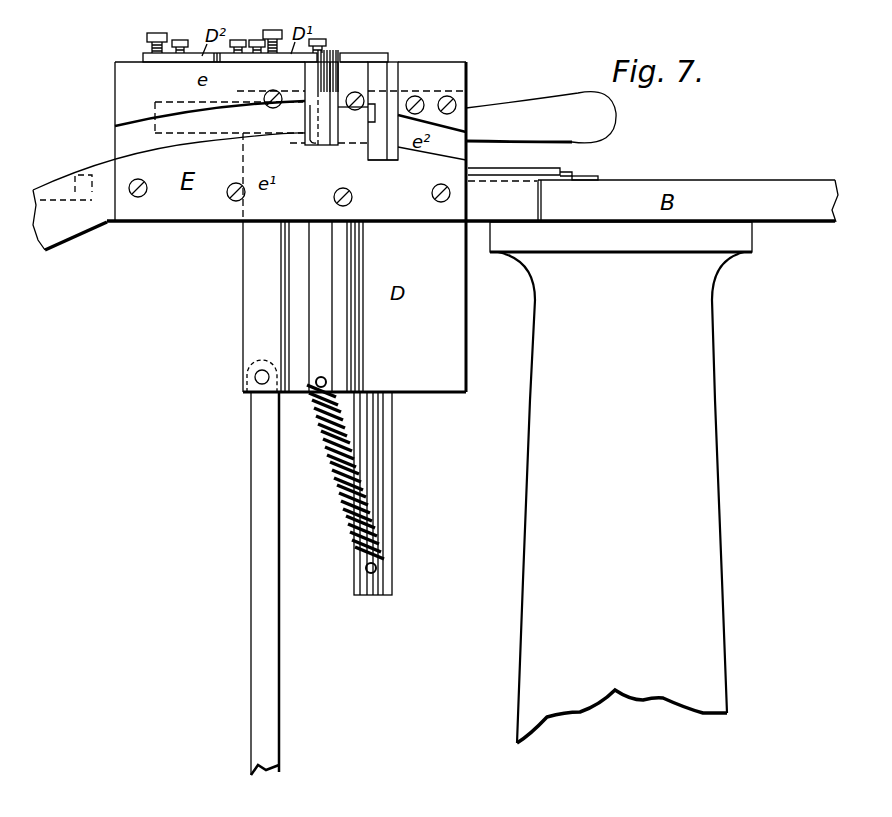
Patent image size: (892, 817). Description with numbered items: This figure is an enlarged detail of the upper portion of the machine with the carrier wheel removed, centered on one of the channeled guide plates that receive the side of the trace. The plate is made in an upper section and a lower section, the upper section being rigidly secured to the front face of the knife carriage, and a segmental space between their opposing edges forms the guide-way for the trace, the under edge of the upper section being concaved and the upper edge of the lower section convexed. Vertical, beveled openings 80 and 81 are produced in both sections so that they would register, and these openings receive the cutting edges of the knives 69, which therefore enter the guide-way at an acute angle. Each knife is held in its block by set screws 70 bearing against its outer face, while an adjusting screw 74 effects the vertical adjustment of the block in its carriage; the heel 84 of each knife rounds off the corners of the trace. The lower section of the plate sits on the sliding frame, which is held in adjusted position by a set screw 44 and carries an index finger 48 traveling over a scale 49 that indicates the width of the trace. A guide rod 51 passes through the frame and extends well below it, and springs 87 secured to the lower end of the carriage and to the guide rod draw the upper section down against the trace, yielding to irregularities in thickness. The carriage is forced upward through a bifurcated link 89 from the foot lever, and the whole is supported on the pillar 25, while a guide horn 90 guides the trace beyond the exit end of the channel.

The adjusting screw 74 is at (155, 34).
The set screws 70 is at (181, 40).
The opening 81 is at (336, 75).
The heel 84 is at (372, 108).
The knife 69 is at (309, 130).
The opening 80 is at (393, 160).
The set screw 44 is at (541, 117).
The index finger 48 is at (565, 172).
The scale 49 is at (590, 176).
The guide horns 90 is at (70, 212).
The guide rod 51 is at (392, 424).
The springs 87 is at (365, 488).
The bifurcated link 89 is at (283, 582).
The pillar 25 is at (621, 482).